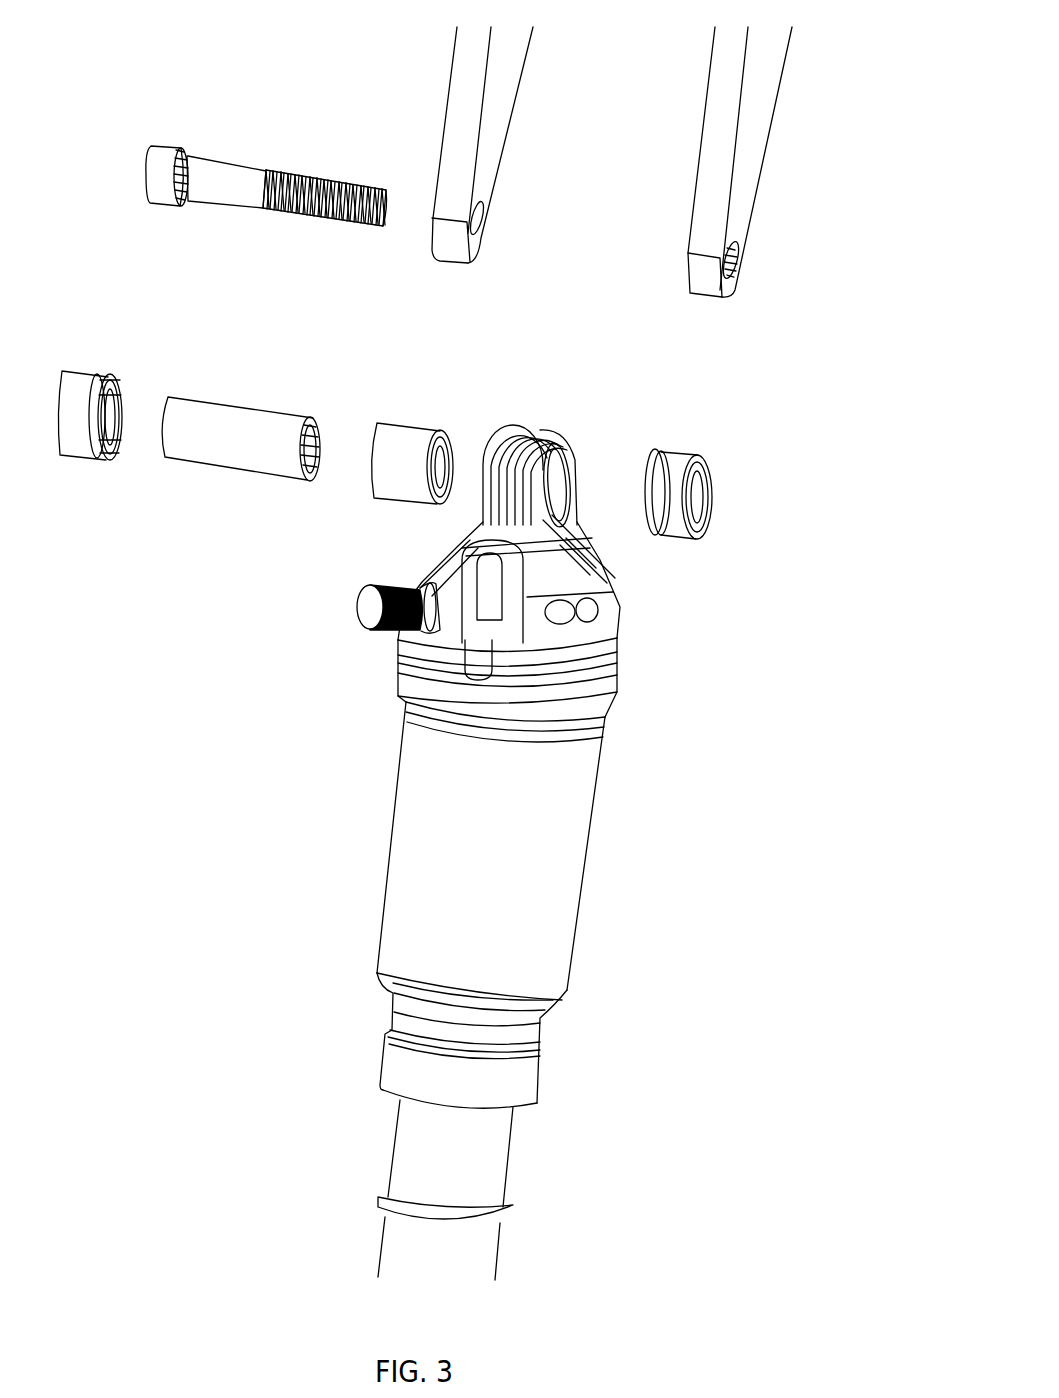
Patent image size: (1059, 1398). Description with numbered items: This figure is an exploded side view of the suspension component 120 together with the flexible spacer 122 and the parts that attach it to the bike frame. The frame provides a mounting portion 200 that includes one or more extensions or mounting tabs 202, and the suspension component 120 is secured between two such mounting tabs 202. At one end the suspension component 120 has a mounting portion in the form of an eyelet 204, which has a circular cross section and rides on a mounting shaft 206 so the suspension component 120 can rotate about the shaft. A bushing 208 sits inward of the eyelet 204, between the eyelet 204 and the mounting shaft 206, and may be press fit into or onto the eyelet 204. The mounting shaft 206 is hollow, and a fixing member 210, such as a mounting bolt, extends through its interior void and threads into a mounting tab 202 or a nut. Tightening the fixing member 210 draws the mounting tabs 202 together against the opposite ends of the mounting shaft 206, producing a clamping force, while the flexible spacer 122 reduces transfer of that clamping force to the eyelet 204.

The mounting portion 200 is at (409, 64).
The mounting tabs 202 is at (447, 153).
The eyelet 204 is at (533, 435).
The mounting shaft 206 is at (277, 408).
The bushing 208 is at (420, 425).
The fixing member 210 is at (161, 170).
The flexible spacer 122 is at (97, 375).
The suspension component 120 is at (424, 769).